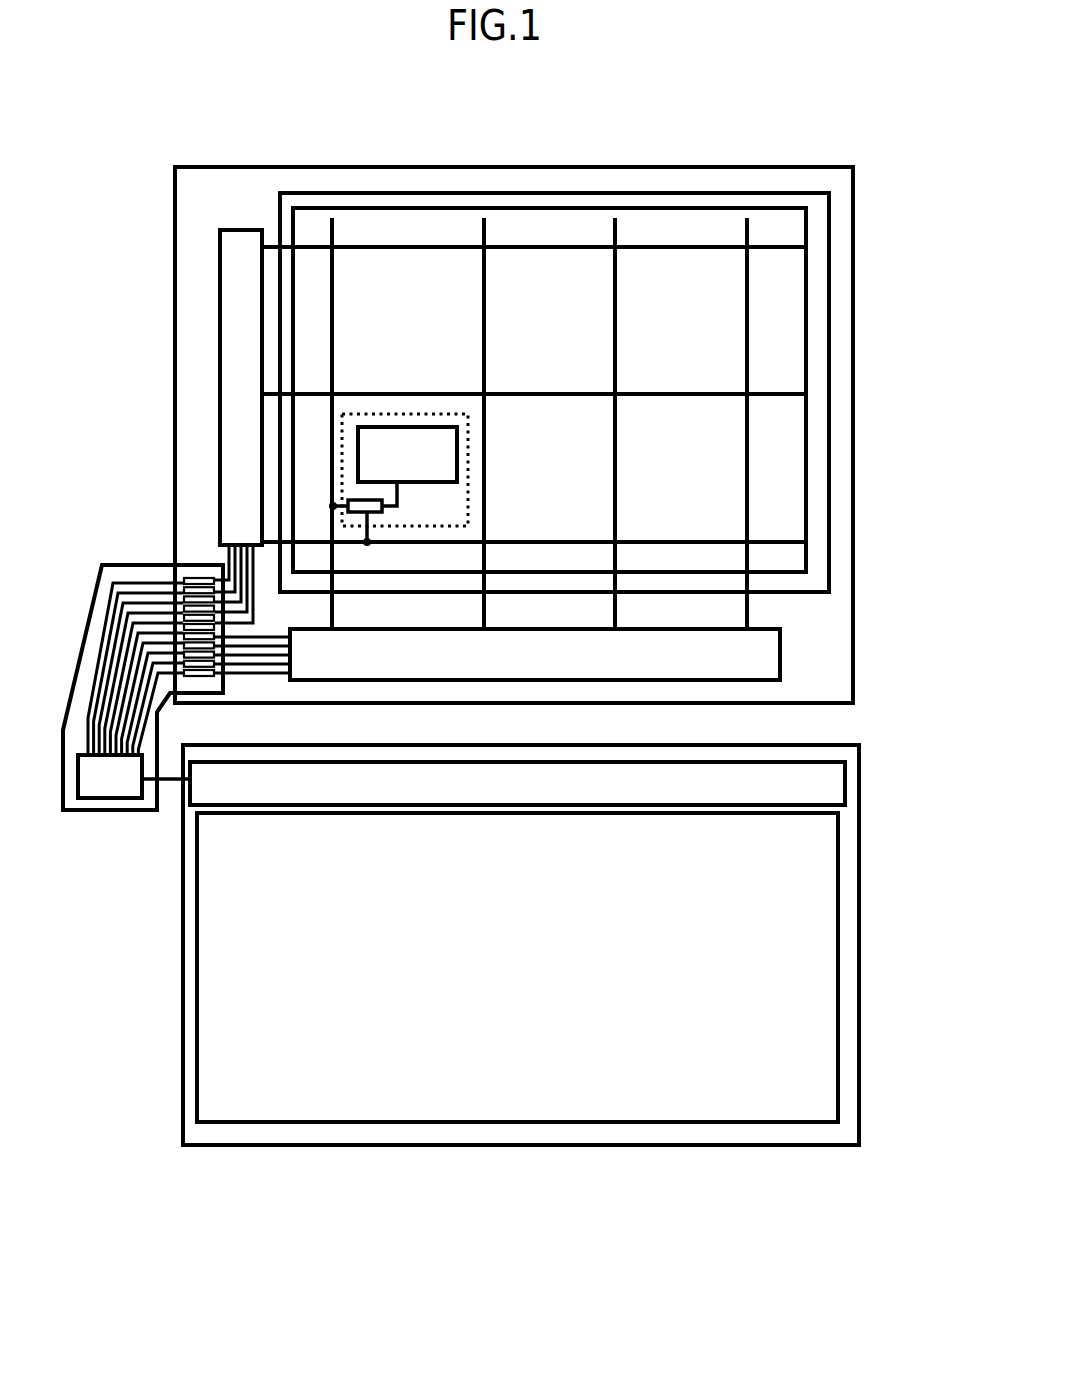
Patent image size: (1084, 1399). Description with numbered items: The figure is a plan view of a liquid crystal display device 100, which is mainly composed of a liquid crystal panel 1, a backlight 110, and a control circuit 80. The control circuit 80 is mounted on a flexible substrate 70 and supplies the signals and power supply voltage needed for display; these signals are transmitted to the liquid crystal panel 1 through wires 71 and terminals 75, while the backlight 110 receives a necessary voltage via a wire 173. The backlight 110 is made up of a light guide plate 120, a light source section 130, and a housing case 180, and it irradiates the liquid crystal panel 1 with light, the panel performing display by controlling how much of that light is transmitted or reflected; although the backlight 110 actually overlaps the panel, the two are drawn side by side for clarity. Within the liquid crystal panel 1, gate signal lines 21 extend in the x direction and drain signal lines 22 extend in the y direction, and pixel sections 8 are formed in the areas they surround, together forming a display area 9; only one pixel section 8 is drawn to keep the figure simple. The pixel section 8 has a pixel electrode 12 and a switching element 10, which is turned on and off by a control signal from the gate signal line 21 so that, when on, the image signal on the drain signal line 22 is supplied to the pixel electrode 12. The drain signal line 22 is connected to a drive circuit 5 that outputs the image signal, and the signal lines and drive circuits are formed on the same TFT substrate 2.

The liquid crystal panel 1 is at (533, 166).
The TFT substrate 2 is at (289, 176).
The drive circuit 5 is at (780, 648).
The pixel section 8 is at (468, 440).
The display area 9 is at (658, 222).
The switching element 10 is at (385, 510).
The pixel electrode 12 is at (419, 456).
The gate signal line 21 is at (536, 393).
The drain signal line 22 is at (335, 337).
The flexible substrate 70 is at (133, 571).
The wire 71 is at (110, 578).
The terminal 75 is at (190, 580).
The control circuit 80 is at (106, 797).
The liquid crystal display device 100 is at (470, 1157).
The backlight 110 is at (655, 1141).
The light guide plate 120 is at (791, 1117).
The light source section 130 is at (795, 775).
The wire 173 is at (168, 787).
The housing case 180 is at (331, 1150).